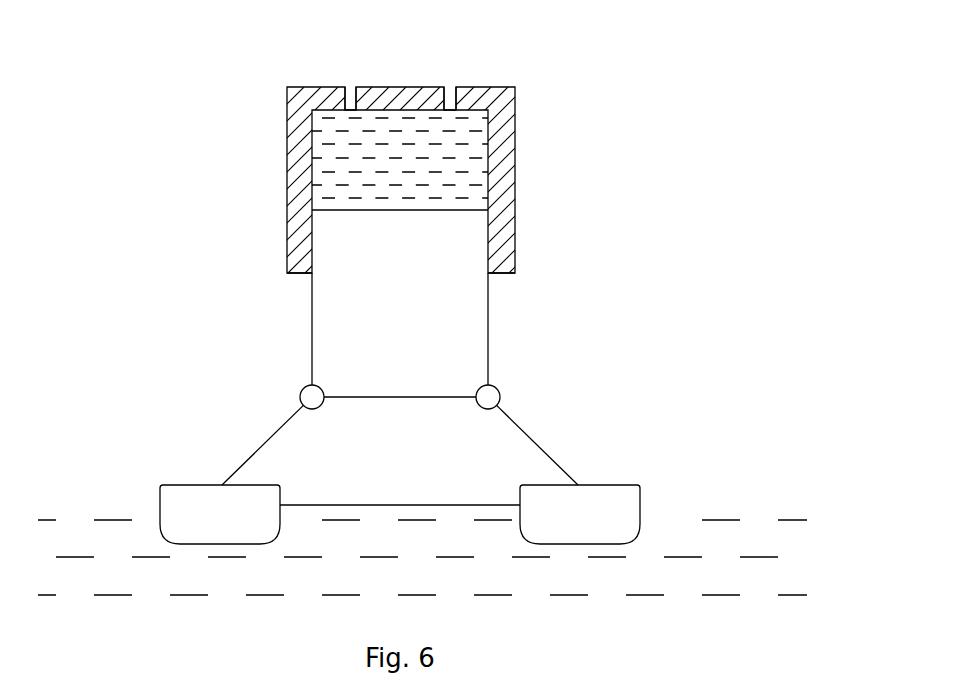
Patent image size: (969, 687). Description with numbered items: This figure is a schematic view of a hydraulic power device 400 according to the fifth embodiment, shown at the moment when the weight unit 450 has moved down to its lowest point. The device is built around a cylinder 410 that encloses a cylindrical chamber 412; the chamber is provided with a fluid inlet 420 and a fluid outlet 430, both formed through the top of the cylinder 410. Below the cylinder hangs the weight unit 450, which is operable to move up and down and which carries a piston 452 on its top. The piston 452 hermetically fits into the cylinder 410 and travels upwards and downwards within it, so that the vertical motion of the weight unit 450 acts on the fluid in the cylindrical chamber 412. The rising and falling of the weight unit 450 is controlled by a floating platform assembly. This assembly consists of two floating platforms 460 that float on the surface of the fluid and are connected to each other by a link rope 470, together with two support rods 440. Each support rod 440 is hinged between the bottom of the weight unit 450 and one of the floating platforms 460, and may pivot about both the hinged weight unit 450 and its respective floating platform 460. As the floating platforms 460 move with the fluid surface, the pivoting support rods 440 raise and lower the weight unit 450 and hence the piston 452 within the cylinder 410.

The hydraulic power device 400 is at (71, 31).
The cylinder 410 is at (287, 173).
The cylindrical chamber 412 is at (477, 153).
The fluid inlet 420 is at (350, 90).
The fluid outlet 430 is at (450, 90).
The support rods 440 is at (268, 443).
The weight unit 450 is at (310, 321).
The piston 452 is at (310, 246).
The floating platforms 460 is at (170, 485).
The link rope 470 is at (400, 505).